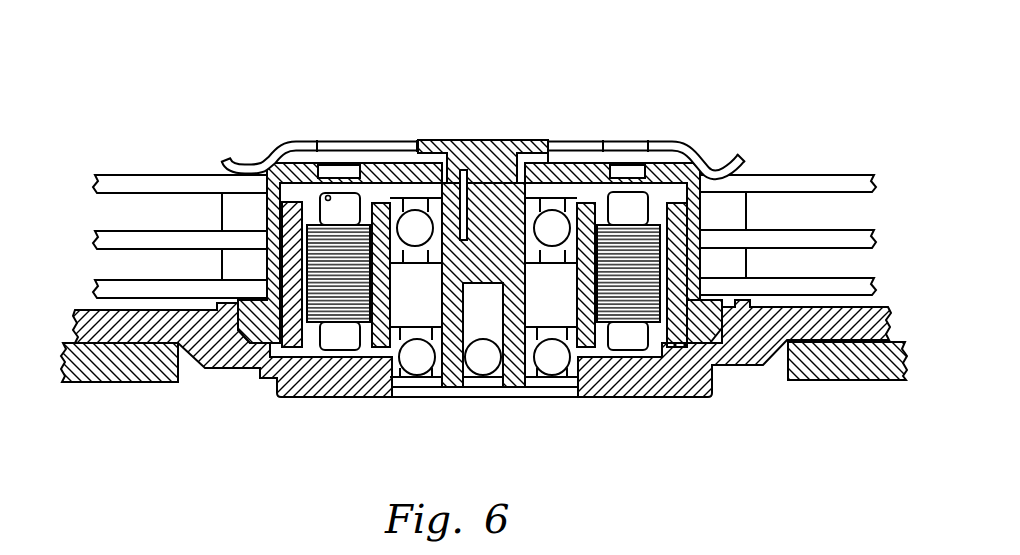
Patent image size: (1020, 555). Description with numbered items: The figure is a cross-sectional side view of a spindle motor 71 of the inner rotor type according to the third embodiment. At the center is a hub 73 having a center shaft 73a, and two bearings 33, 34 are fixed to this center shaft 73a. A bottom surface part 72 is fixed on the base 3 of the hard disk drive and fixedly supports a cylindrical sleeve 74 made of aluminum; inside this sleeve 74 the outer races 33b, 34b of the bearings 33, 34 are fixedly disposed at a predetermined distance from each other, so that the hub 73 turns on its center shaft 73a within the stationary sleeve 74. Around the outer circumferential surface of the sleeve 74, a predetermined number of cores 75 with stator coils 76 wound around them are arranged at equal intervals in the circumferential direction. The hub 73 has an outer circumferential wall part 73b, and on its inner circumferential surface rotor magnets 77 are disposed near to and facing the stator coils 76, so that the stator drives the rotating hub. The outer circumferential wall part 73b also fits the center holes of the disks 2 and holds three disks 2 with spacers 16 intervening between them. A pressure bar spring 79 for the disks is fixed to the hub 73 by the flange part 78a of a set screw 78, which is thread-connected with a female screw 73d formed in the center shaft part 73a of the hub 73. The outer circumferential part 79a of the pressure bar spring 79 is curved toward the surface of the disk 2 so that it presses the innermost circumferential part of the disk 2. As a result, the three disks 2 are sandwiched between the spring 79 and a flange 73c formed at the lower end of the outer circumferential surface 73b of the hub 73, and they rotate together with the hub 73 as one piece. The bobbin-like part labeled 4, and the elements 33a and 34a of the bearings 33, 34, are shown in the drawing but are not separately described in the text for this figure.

The spindle motor 71 is at (482, 242).
The disks 2 is at (117, 176).
The spacers 16 is at (230, 214).
The base 3 is at (848, 367).
The bottom surface part 72 is at (665, 398).
The hub 73 is at (372, 178).
The center shaft 73a is at (513, 368).
The outer circumferential wall part 73b is at (689, 255).
The flange 73c is at (710, 366).
The female screw 73d is at (495, 185).
The cylindrical sleeve 74 is at (392, 310).
The cores 75 is at (331, 260).
The stator coils 76 is at (370, 280).
The bobbin 4 is at (338, 343).
The rotor magnets 77 is at (678, 226).
The set screw 78 is at (505, 190).
The flange part 78a is at (560, 192).
The pressure bar spring 79 is at (683, 151).
The outer circumferential part 79a is at (247, 165).
The bearing 33 is at (554, 186).
The bearing inner wall 33a is at (440, 200).
The outer race 33b is at (609, 180).
The bearing 34 is at (525, 410).
The balls 34a is at (436, 365).
The outer race 34b is at (573, 368).